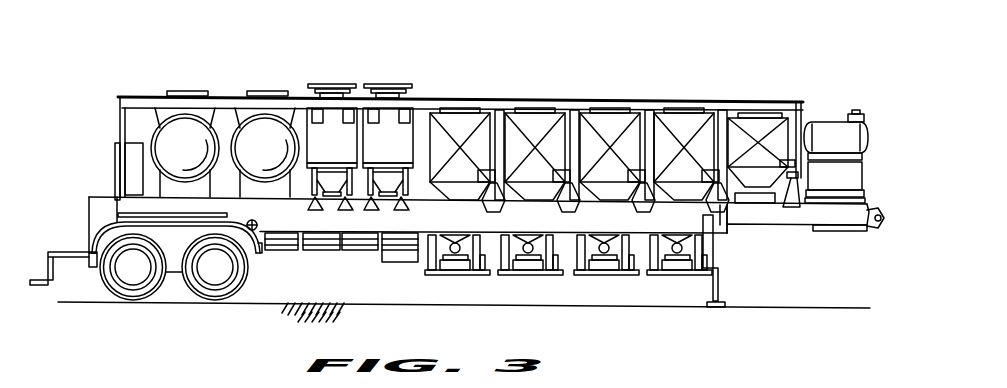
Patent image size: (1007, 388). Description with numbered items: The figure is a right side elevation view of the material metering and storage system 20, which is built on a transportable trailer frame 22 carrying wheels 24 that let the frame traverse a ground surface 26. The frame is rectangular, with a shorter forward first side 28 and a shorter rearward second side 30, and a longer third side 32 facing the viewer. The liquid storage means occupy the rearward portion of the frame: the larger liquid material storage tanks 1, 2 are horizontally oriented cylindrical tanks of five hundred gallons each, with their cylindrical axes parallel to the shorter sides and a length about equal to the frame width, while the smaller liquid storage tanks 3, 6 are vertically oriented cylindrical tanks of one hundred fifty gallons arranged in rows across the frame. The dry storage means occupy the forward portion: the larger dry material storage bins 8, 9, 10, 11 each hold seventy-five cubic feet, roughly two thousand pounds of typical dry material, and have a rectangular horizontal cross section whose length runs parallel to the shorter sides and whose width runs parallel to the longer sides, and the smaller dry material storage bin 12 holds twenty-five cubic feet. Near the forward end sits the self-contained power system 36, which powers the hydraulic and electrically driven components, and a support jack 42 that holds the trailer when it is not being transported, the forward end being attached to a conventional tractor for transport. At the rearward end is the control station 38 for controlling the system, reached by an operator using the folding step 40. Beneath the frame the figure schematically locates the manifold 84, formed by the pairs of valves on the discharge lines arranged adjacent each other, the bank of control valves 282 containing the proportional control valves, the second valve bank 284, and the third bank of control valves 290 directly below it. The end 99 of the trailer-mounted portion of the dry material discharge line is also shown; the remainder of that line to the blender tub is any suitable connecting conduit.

The larger liquid material storage tank 1 is at (181, 124).
The larger liquid material storage tank 2 is at (263, 124).
The smaller liquid storage tank 3 is at (329, 113).
The smaller liquid storage tank 6 is at (387, 115).
The larger dry material storage bin 8 is at (458, 120).
The larger dry material storage bin 9 is at (531, 122).
The larger dry material storage bin 10 is at (606, 123).
The larger dry material storage bin 11 is at (680, 123).
The smaller dry material storage bin 12 is at (757, 125).
The material metering and storage system 20 is at (651, 91).
The trailer frame 22 is at (745, 224).
The wheels 24 is at (213, 293).
The ground surface 26 is at (316, 302).
The first side 28 is at (874, 234).
The second side 30 is at (88, 203).
The third side 32 is at (780, 219).
The self-contained power system 36 is at (830, 120).
The control station means 38 is at (114, 150).
The folding step 40 is at (48, 266).
The support jack 42 is at (721, 290).
The manifold 84 is at (289, 246).
The end of dry material discharge line 99 is at (257, 220).
The bank of control valves 282 is at (337, 246).
The second valve bank 284 is at (382, 256).
The third bank of control valves 290 is at (385, 262).